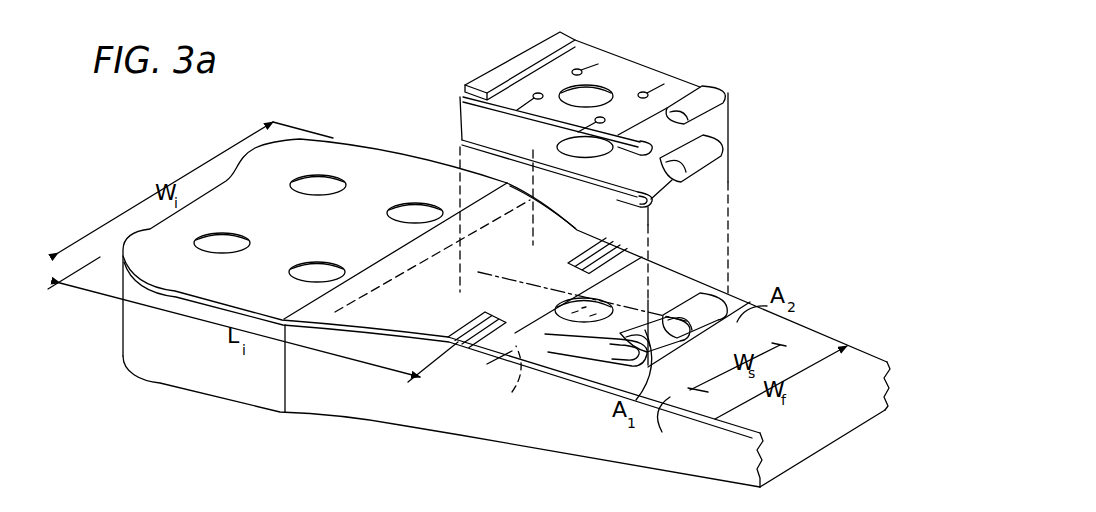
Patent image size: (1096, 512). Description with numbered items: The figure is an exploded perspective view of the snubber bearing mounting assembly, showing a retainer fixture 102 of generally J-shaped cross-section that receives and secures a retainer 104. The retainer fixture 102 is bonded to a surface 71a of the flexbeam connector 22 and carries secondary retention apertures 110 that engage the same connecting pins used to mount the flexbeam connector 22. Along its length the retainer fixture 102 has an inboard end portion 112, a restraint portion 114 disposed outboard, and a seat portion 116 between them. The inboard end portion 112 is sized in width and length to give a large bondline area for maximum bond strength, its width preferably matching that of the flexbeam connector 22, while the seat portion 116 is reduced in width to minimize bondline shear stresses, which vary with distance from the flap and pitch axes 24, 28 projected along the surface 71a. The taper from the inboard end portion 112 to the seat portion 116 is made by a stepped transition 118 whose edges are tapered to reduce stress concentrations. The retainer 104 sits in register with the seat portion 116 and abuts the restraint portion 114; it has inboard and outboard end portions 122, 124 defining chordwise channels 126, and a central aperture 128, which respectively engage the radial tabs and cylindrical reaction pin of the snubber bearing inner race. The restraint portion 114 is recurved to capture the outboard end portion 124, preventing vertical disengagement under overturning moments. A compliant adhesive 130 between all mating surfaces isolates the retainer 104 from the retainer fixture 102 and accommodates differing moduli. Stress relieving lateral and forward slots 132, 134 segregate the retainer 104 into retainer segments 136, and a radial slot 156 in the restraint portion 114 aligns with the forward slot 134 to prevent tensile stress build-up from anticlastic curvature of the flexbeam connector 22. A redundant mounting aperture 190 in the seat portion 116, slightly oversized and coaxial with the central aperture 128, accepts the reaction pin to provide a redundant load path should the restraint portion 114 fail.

The flexbeam connector 22 is at (592, 426).
The flap axis 24 is at (507, 394).
The pitch axis 28 is at (515, 262).
The surface 71a is at (658, 426).
The retainer fixture 102 is at (513, 254).
The retainer 104 is at (593, 118).
The secondary retention apertures 110 is at (309, 175).
The inboard end portion 112 is at (382, 303).
The restraint portion 114 is at (657, 345).
The seat portion 116 is at (597, 338).
The stepped transition 118 is at (452, 322).
The inboard end portion 122 is at (517, 58).
The outboard end portion 124 is at (702, 102).
The chordwise channels 126 is at (462, 97).
The central aperture 128 is at (566, 88).
The compliant adhesive 130 is at (540, 152).
The lateral slots 132 is at (599, 61).
The forward slot 134 is at (693, 115).
The retainer segments 136 is at (513, 114).
The radial slot 156 is at (693, 332).
The redundant mounting aperture 190 is at (568, 299).